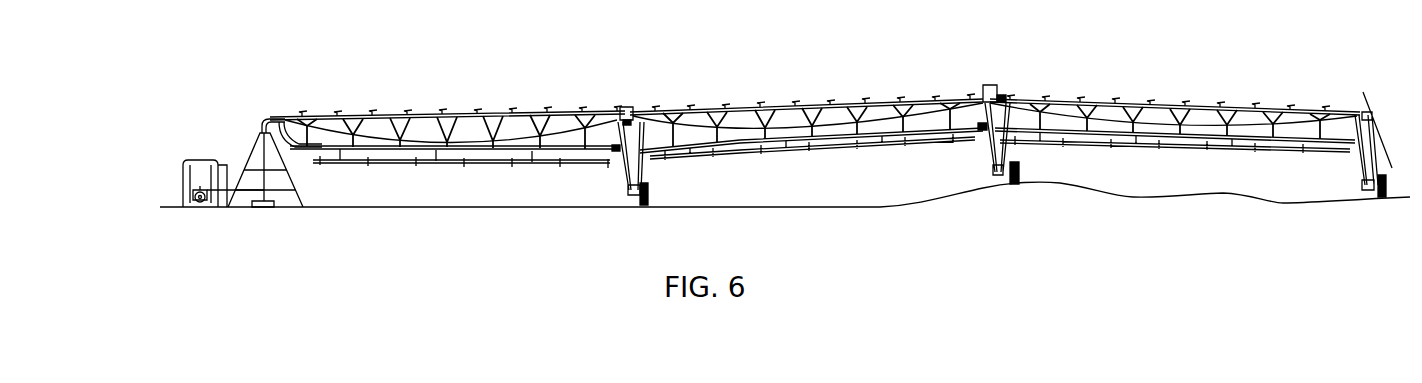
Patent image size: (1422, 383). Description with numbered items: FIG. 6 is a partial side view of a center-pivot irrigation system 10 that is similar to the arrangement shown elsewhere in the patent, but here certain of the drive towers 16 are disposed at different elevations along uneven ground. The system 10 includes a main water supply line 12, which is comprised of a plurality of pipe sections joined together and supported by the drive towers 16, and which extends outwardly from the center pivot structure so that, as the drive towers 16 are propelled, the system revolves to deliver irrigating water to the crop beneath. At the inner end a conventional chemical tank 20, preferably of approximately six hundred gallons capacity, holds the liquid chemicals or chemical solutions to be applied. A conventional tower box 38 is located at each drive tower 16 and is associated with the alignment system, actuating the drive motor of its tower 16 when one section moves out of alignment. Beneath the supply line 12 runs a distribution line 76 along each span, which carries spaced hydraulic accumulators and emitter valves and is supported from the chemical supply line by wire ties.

The center-pivot irrigation system 10 is at (815, 91).
The main water supply line 12 is at (465, 108).
The drive tower 16 is at (642, 165).
The chemical tank 20 is at (210, 163).
The tower box 38 is at (625, 106).
The distribution line 76 is at (398, 162).